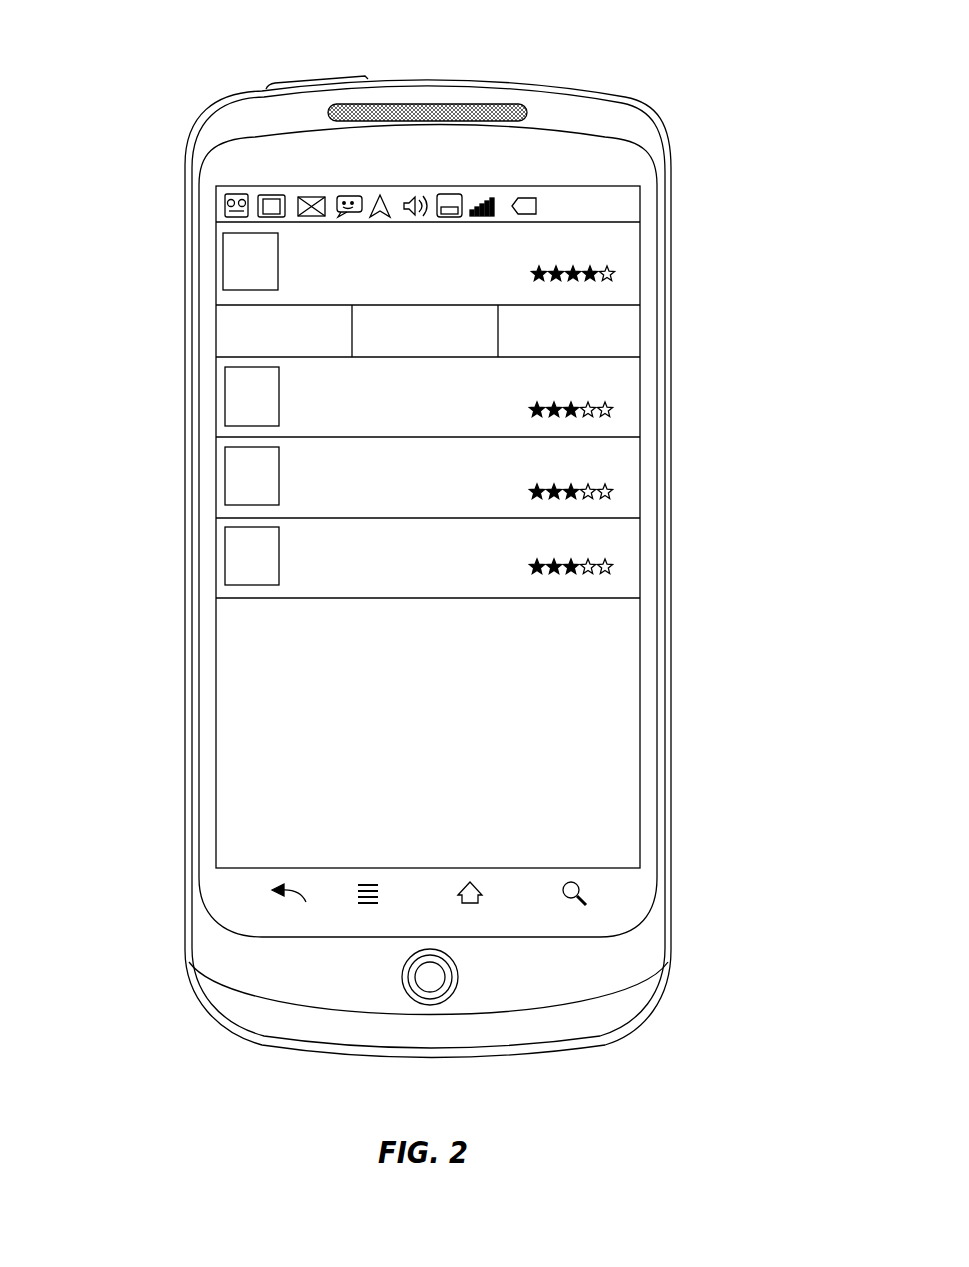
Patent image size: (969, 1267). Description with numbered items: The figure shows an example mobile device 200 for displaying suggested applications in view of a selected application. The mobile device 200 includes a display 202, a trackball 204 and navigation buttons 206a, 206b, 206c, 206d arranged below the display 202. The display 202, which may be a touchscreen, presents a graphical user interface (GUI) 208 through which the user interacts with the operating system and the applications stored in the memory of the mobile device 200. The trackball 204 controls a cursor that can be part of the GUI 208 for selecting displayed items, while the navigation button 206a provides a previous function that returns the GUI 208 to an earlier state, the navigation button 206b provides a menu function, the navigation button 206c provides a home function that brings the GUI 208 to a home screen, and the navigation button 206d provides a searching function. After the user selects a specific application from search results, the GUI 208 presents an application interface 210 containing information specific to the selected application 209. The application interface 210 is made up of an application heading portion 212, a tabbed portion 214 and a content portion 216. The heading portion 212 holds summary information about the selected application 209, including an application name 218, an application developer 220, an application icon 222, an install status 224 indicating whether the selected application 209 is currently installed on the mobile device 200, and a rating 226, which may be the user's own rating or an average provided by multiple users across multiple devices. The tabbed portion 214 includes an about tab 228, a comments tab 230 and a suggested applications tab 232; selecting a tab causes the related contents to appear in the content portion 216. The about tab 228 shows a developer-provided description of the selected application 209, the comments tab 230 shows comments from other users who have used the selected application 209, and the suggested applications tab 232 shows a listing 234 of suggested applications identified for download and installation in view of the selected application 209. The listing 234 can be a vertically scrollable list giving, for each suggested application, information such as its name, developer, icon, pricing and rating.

The mobile device 200 is at (133, 85).
The display 202 is at (223, 523).
The trackball 204 is at (430, 977).
The navigation button 206a is at (285, 918).
The navigation button 206b is at (367, 917).
The navigation button 206c is at (487, 917).
The navigation button 206d is at (603, 898).
The graphical user interface 208 is at (638, 613).
The selected application 209 is at (215, 268).
The application interface 210 is at (216, 223).
The application heading portion 212 is at (641, 221).
The tabbed portion 214 is at (641, 313).
The content portion 216 is at (641, 482).
The application name 218 is at (307, 240).
The application developer 220 is at (280, 283).
The application icon 222 is at (250, 233).
The install status 224 is at (568, 237).
The rating 226 is at (620, 270).
The about tab 228 is at (216, 337).
The comments tab 230 is at (348, 333).
The suggested applications tab 232 is at (641, 350).
The listing of suggested applications 234 is at (216, 607).